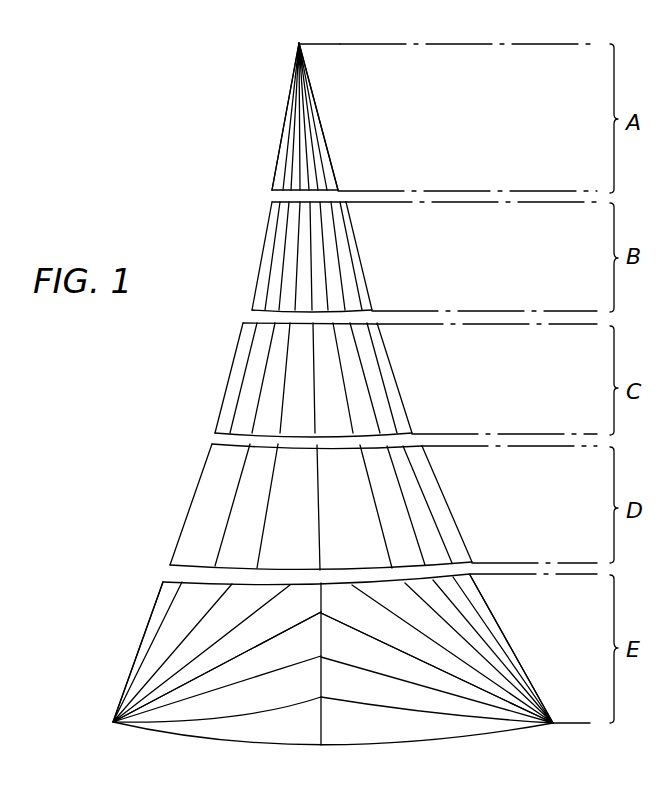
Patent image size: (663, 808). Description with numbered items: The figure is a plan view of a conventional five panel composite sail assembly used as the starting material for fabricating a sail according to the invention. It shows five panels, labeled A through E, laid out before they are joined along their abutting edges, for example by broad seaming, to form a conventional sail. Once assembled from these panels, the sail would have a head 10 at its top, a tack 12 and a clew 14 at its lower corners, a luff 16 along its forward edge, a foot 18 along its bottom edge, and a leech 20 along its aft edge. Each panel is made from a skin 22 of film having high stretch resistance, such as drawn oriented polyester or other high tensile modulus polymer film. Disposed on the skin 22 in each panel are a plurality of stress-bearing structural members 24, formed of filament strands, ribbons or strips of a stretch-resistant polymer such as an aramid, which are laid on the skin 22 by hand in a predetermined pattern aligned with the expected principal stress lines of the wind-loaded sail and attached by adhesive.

The head 10 is at (298, 42).
The tack 12 is at (113, 723).
The clew 14 is at (553, 724).
The luff 16 is at (232, 384).
The foot 18 is at (362, 746).
The leech 20 is at (363, 270).
The skin 22 is at (280, 165).
The stress-bearing structural members 24 is at (290, 115).